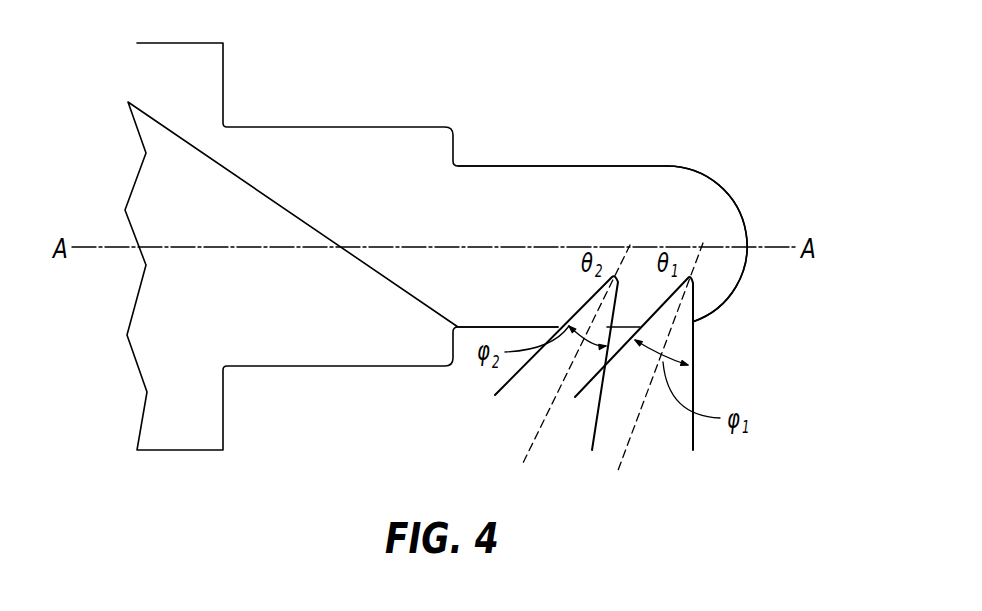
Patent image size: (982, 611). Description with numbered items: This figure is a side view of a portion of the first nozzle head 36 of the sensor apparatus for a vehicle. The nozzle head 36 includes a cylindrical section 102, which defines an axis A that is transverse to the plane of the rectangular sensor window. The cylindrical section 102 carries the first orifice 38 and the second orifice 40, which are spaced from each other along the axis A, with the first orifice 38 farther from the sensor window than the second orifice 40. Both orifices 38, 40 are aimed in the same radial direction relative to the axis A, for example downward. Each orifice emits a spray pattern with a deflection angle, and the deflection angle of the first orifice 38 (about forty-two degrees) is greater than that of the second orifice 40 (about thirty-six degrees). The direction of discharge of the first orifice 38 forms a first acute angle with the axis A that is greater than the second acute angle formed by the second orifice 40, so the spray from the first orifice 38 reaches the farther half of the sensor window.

The first nozzle head 36 is at (442, 60).
The cylindrical section 102 is at (575, 190).
The second orifice 40 is at (582, 305).
The first orifice 38 is at (693, 300).